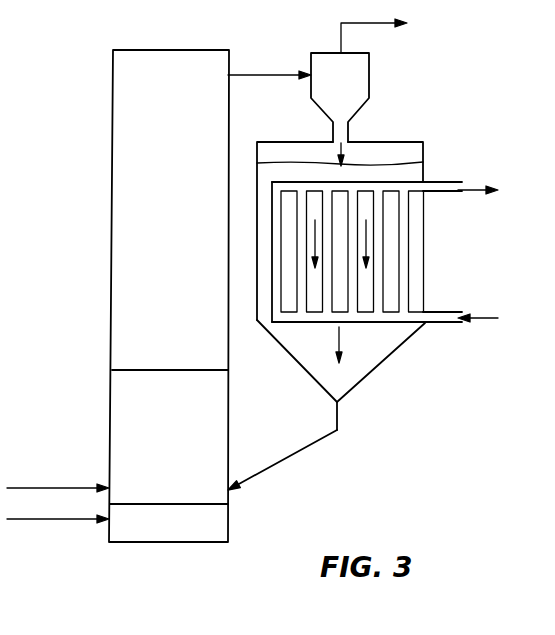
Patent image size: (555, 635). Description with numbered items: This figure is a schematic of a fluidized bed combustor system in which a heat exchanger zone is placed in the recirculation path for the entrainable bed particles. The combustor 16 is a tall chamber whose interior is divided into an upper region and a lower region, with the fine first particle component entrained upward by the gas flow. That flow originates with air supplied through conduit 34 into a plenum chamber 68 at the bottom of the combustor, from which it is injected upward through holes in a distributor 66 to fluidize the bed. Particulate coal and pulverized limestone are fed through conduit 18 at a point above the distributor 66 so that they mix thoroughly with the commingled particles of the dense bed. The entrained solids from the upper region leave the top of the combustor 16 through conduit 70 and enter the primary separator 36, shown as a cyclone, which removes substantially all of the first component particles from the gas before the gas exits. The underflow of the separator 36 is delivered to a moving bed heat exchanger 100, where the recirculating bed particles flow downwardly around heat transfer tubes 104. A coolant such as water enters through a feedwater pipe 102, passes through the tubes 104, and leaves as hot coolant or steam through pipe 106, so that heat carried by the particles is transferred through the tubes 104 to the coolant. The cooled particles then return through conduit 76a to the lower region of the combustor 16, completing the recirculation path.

The combustor 16 is at (112, 227).
The conduit 18 is at (30, 487).
The conduit 34 is at (22, 522).
The primary separator 36 is at (352, 87).
The distributor 66 is at (175, 506).
The plenum chamber 68 is at (165, 528).
The conduit 70 is at (277, 77).
The conduit 76a is at (303, 447).
The moving bed heat exchanger 100 is at (422, 120).
The feedwater pipe 102 is at (443, 312).
The heat transfer tubes 104 is at (402, 267).
The hot coolant or steam pipe 106 is at (443, 182).